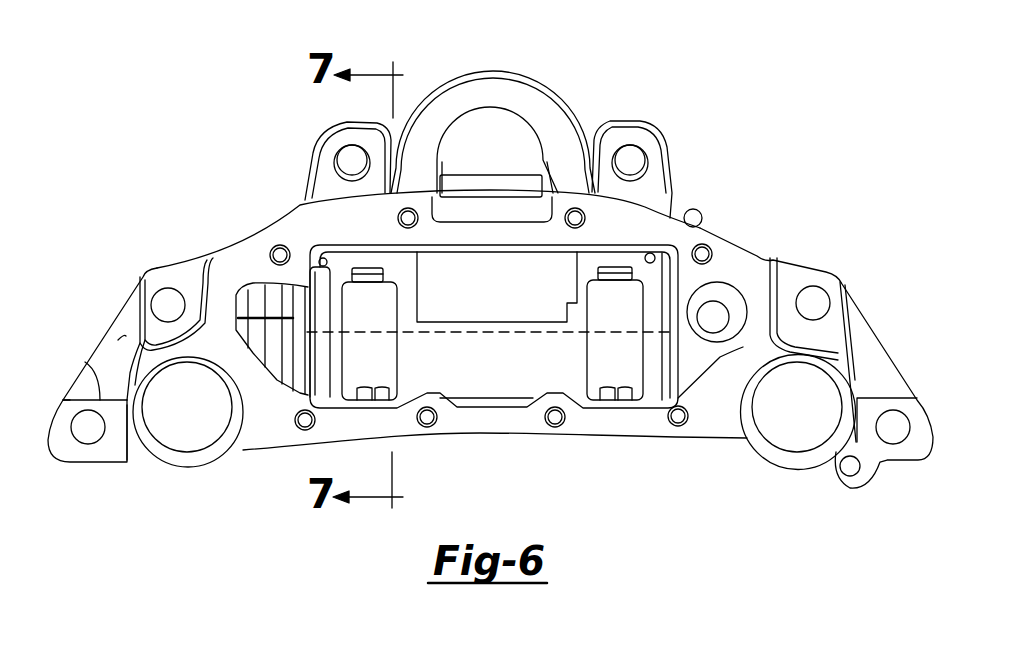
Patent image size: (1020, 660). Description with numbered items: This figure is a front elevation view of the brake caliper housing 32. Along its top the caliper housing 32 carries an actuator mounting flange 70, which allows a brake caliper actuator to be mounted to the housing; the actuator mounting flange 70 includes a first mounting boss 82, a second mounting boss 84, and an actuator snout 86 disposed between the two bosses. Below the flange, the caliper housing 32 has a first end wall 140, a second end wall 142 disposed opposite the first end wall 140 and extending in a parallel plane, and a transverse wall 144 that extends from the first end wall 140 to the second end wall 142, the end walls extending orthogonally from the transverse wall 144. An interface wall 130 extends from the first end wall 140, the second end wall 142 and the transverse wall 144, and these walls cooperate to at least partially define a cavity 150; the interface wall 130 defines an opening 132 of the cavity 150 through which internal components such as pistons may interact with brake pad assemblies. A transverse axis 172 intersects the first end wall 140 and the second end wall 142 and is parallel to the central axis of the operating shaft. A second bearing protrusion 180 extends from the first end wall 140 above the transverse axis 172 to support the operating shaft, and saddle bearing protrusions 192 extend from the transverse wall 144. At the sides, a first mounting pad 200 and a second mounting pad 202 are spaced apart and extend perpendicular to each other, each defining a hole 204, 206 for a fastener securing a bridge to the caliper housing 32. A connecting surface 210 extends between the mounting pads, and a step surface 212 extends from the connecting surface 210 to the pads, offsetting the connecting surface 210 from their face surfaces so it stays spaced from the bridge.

The caliper housing 32 is at (184, 109).
The actuator mounting flange 70 is at (443, 85).
The actuator snout 86 is at (492, 120).
The first mounting boss 82 is at (330, 133).
The second mounting boss 84 is at (630, 120).
The second bearing protrusion 180 is at (321, 258).
The saddle bearing protrusion 192 is at (375, 305).
The opening 132 is at (253, 280).
The second mounting pad 202 is at (153, 278).
The hole 206 is at (167, 307).
The connecting surface 210 is at (123, 336).
The step surface 212 is at (85, 362).
The transverse axis 172 is at (538, 327).
The first end wall 140 is at (313, 367).
The cavity 150 is at (478, 376).
The transverse wall 144 is at (528, 385).
The interface wall 130 is at (605, 423).
The second end wall 142 is at (650, 380).
The first mounting pad 200 is at (62, 447).
The hole 204 is at (95, 432).